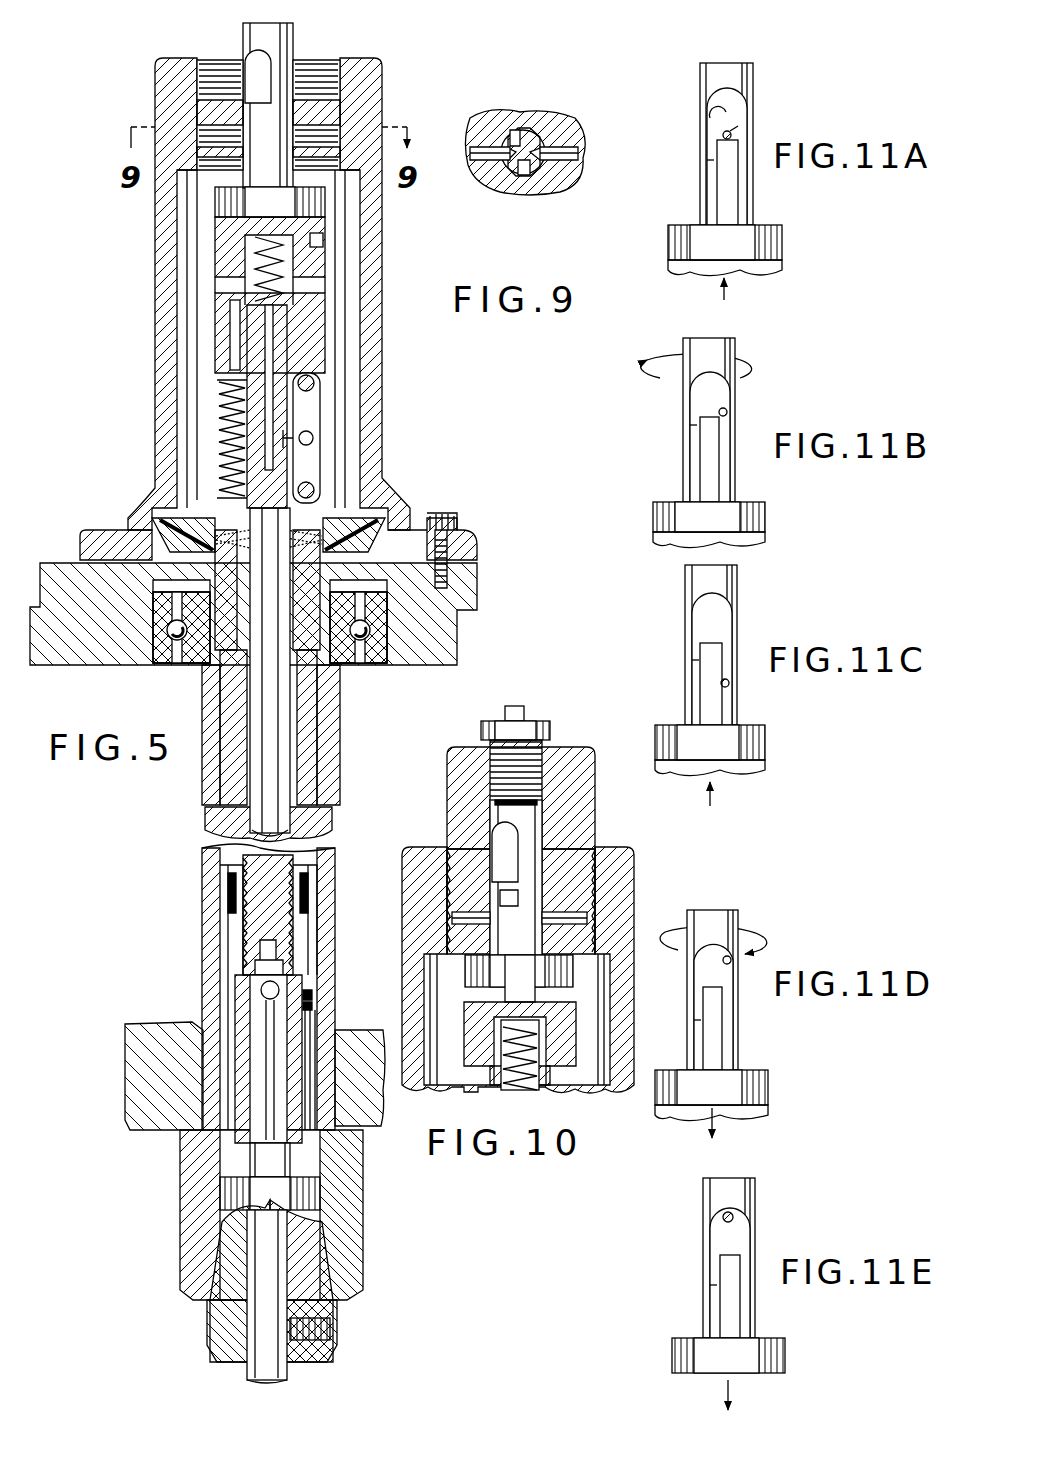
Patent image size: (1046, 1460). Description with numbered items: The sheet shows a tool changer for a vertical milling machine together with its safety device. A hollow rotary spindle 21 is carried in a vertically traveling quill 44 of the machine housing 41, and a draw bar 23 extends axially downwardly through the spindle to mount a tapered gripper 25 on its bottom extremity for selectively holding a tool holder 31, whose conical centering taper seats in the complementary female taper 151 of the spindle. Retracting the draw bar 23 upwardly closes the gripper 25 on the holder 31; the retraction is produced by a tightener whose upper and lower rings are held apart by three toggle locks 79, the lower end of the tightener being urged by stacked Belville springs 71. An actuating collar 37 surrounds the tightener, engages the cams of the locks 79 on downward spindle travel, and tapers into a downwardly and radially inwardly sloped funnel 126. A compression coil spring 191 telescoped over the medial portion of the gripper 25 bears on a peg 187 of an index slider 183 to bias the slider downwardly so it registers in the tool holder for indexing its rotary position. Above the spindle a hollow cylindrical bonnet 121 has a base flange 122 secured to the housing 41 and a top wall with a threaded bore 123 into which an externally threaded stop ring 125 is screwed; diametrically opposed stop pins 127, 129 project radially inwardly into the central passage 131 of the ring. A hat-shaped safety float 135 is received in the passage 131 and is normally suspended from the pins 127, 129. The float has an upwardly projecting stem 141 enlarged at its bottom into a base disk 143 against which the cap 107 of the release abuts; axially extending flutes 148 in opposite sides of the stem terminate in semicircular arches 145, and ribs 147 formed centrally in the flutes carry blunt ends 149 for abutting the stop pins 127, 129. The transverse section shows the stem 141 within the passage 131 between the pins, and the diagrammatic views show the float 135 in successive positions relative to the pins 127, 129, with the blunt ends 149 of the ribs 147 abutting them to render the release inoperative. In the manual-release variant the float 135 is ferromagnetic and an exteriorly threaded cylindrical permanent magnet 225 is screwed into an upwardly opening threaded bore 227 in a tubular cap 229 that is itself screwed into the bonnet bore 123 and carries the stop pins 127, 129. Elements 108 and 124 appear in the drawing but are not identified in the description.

In FIG. 5, the hollow rotary spindle 21 is at (336, 868).
In FIG. 5, the draw bar 23 is at (295, 720).
In FIG. 5, the tapered gripper 25 is at (236, 1056).
In FIG. 5, the tool holder 31 is at (206, 1324).
In FIG. 5, the actuating collar 37 is at (372, 505).
In FIG. 5, the housing 41 is at (484, 578).
In FIG. 5, the quill 44 is at (123, 1080).
In FIG. 5, the Belville springs 71 is at (250, 585).
In FIG. 5, the toggle locks 79 is at (328, 415).
In FIG. 5, the cap 107 is at (318, 258).
In FIG. 10, the cap 107 is at (577, 1025).
In FIG. 11A, the cap 107 is at (784, 264).
In FIG. 11B, the cap 107 is at (767, 538).
In FIG. 11C, the cap 107 is at (767, 768).
In FIG. 11D, the cap 107 is at (770, 1112).
In FIG. 5, the notch 108 is at (318, 238).
In FIG. 5, the bonnet 121 is at (390, 95).
In FIG. 10, the bonnet 121 is at (638, 870).
In FIG. 5, the base flange 122 is at (455, 543).
In FIG. 5, the threaded bore 123 is at (330, 68).
In FIG. 5, the seal ring 124 is at (215, 506).
In FIG. 5, the stop ring 125 is at (200, 116).
In FIG. 9, the stop ring 125 is at (568, 182).
In FIG. 5, the funnel 126 is at (228, 522).
In FIG. 9, the stop pin 127 is at (478, 152).
In FIG. 10, the stop pin 127 is at (470, 920).
In FIG. 11A, the stop pin 127 is at (722, 135).
In FIG. 11B, the stop pin 127 is at (728, 410).
In FIG. 11C, the stop pin 127 is at (730, 683).
In FIG. 11D, the stop pin 127 is at (732, 960).
In FIG. 11E, the stop pin 127 is at (735, 1220).
In FIG. 9, the stop pin 129 is at (566, 152).
In FIG. 10, the stop pin 129 is at (582, 908).
In FIG. 10, the passage 131 is at (498, 896).
In FIG. 5, the safety float 135 is at (296, 48).
In FIG. 9, the safety float 135 is at (525, 136).
In FIG. 10, the safety float 135 is at (516, 878).
In FIG. 11A, the safety float 135 is at (758, 70).
In FIG. 11B, the safety float 135 is at (740, 348).
In FIG. 11C, the safety float 135 is at (742, 592).
In FIG. 11D, the safety float 135 is at (742, 916).
In FIG. 11E, the safety float 135 is at (758, 1185).
In FIG. 11A, the stem 141 is at (755, 96).
In FIG. 5, the base disk 143 is at (312, 210).
In FIG. 10, the base disk 143 is at (574, 972).
In FIG. 11A, the base disk 143 is at (784, 236).
In FIG. 11B, the base disk 143 is at (767, 512).
In FIG. 11C, the base disk 143 is at (767, 742).
In FIG. 11D, the base disk 143 is at (770, 1084).
In FIG. 11E, the base disk 143 is at (786, 1350).
In FIG. 11A, the semicircular arches 145 is at (713, 110).
In FIG. 9, the ribs 147 is at (524, 178).
In FIG. 10, the ribs 147 is at (504, 955).
In FIG. 11A, the ribs 147 is at (740, 178).
In FIG. 11B, the ribs 147 is at (722, 475).
In FIG. 11C, the ribs 147 is at (724, 713).
In FIG. 11D, the ribs 147 is at (724, 1042).
In FIG. 11E, the ribs 147 is at (742, 1305).
In FIG. 5, the flutes 148 is at (258, 76).
In FIG. 9, the flutes 148 is at (492, 150).
In FIG. 11A, the flutes 148 is at (705, 162).
In FIG. 11B, the flutes 148 is at (690, 426).
In FIG. 11C, the flutes 148 is at (692, 660).
In FIG. 11D, the flutes 148 is at (700, 1020).
In FIG. 11E, the flutes 148 is at (710, 1286).
In FIG. 10, the blunt ends 149 is at (500, 838).
In FIG. 11A, the blunt ends 149 is at (735, 137).
In FIG. 5, the female taper 151 is at (332, 1265).
In FIG. 5, the index slider 183 is at (314, 1020).
In FIG. 5, the peg 187 is at (314, 1007).
In FIG. 5, the compression coil spring 191 is at (314, 994).
In FIG. 10, the permanent magnet 225 is at (526, 712).
In FIG. 10, the threaded bore 227 is at (552, 745).
In FIG. 10, the tubular cap 229 is at (598, 815).